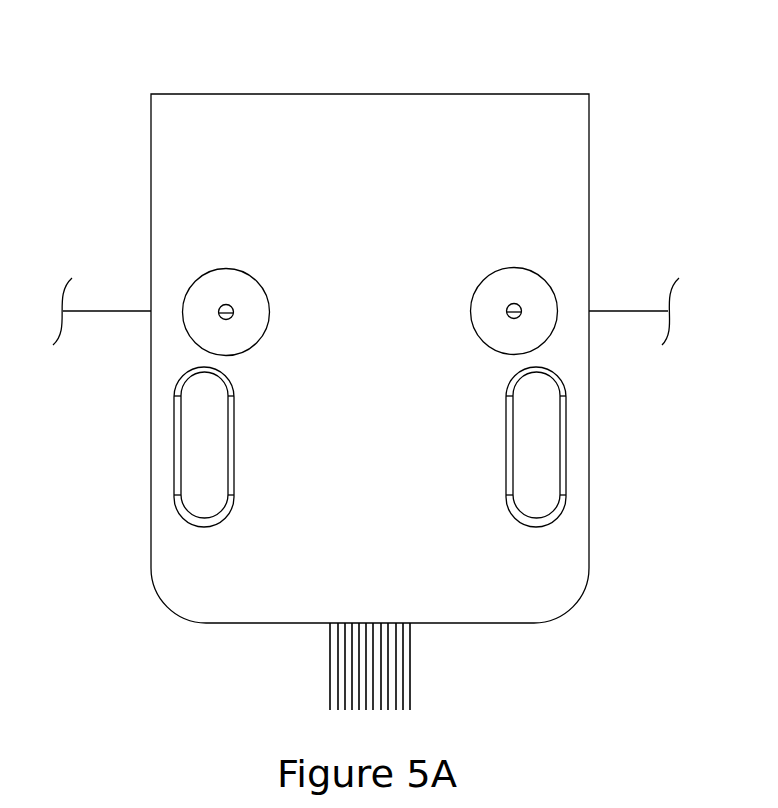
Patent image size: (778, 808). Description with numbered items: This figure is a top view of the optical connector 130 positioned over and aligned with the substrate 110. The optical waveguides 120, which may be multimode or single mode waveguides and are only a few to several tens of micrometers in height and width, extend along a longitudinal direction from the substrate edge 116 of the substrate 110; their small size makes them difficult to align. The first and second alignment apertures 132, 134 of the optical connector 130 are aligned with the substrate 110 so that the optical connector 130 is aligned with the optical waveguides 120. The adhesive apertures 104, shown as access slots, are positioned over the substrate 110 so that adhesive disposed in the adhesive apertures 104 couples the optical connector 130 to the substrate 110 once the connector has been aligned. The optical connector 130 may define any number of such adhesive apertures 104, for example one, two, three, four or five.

The optical connector 130 is at (336, 148).
The substrate 110 is at (649, 403).
The substrate edge 116 is at (118, 311).
The first alignment aperture 132 is at (199, 295).
The second alignment aperture 134 is at (537, 293).
The adhesive aperture 104 is at (205, 453).
The optical waveguide 120 is at (329, 655).